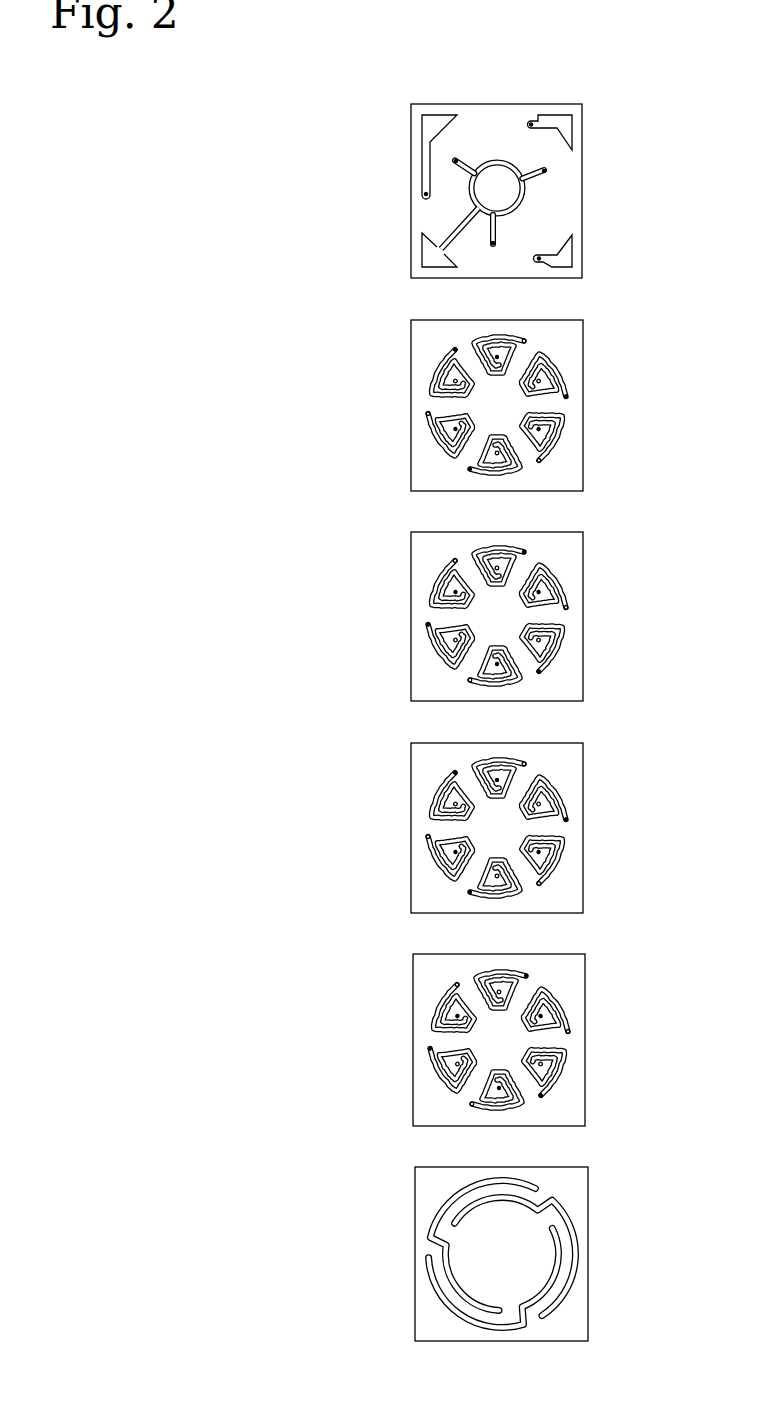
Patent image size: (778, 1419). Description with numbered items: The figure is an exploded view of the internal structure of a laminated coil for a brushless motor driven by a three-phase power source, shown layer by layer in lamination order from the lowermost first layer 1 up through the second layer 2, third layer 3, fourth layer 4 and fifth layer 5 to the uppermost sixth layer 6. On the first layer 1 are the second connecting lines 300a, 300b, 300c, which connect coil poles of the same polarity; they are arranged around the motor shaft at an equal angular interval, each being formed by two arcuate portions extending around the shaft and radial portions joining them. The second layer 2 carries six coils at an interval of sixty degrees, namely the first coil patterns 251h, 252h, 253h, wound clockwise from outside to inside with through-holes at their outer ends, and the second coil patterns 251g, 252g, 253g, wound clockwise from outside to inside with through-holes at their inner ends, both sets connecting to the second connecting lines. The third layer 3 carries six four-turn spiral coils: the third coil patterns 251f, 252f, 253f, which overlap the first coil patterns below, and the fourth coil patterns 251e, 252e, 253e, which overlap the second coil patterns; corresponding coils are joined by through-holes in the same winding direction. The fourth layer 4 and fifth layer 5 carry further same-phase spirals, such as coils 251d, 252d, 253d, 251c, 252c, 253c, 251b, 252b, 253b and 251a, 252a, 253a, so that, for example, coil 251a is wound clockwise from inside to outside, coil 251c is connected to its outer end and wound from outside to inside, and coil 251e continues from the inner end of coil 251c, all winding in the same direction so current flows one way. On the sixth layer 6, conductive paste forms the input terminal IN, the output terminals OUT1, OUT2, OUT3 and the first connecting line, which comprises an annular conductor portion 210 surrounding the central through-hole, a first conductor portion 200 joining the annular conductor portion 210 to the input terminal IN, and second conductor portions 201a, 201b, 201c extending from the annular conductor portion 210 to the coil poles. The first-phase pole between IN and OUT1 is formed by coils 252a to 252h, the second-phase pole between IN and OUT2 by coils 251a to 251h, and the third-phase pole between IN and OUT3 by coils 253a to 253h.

The first layer 1 is at (433, 1254).
The second layer 2 is at (432, 1040).
The third layer 3 is at (431, 828).
The fourth layer 4 is at (431, 616).
The fifth layer 5 is at (431, 405).
The sixth layer 6 is at (430, 191).
The first conductor portion 200 is at (455, 227).
The second conductor portion 201a is at (463, 155).
The second conductor portion 201b is at (553, 177).
The second conductor portion 201c is at (496, 248).
The annular conductor portion 210 is at (527, 203).
The input terminal IN is at (425, 257).
The output terminal OUT1 is at (428, 123).
The output terminal OUT2 is at (565, 125).
The output terminal OUT3 is at (572, 258).
The first coil pattern 251a is at (510, 478).
The coil 251b is at (490, 334).
The second coil pattern 251c is at (510, 689).
The coil 251d is at (490, 545).
The third coil pattern 251e is at (510, 901).
The third coil pattern 251f is at (490, 757).
The fourth coil pattern 251g is at (512, 1113).
The first coil pattern 251h is at (492, 969).
The coil 252a is at (560, 358).
The coil 252b is at (437, 440).
The coil 252c is at (560, 568).
The coil 252d is at (437, 651).
The fourth coil pattern 252e is at (560, 781).
The third coil pattern 252f is at (437, 863).
The second coil pattern 252g is at (562, 993).
The first coil pattern 252h is at (439, 1075).
The coil 253a is at (438, 355).
The coil 253b is at (558, 440).
The coil 253c is at (438, 566).
The coil 253d is at (558, 651).
The fourth coil pattern 253e is at (438, 778).
The third coil pattern 253f is at (558, 863).
The second coil pattern 253g is at (440, 990).
The first coil pattern 253h is at (560, 1075).
The second connecting line 300a is at (440, 1216).
The second connecting line 300b is at (438, 1300).
The second connecting line 300c is at (565, 1207).